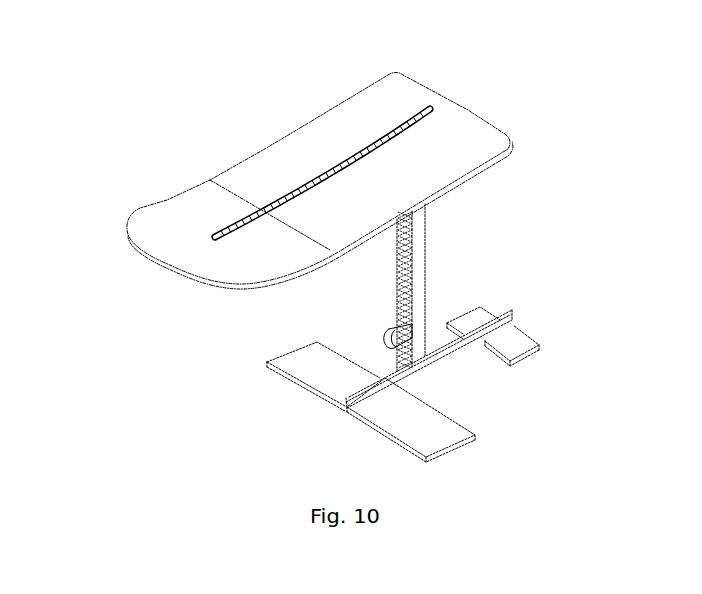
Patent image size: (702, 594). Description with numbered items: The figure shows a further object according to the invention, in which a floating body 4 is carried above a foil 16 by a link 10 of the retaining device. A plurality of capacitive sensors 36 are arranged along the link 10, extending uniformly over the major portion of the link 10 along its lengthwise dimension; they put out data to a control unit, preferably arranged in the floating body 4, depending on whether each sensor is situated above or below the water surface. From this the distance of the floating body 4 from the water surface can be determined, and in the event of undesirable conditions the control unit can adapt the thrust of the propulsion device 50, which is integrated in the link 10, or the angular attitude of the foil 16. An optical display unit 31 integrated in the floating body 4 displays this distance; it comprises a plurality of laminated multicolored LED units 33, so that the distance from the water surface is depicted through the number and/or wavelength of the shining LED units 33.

The floating body 4 is at (425, 130).
The optical display unit 31 is at (352, 130).
The LED units 33 is at (422, 107).
The link 10 is at (417, 253).
The capacitive sensors 36 is at (410, 283).
The propulsion device 50 is at (429, 323).
The foil 16 is at (327, 370).